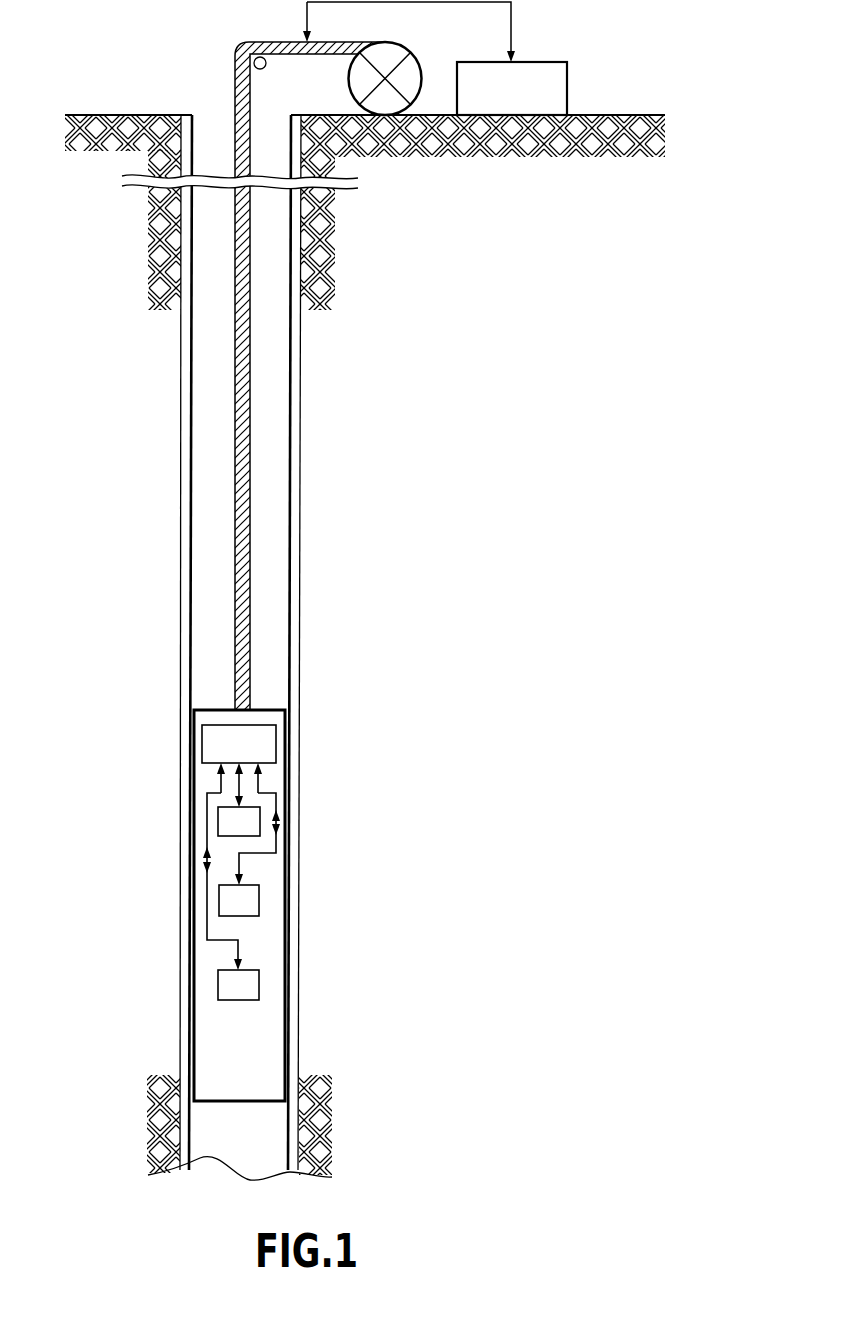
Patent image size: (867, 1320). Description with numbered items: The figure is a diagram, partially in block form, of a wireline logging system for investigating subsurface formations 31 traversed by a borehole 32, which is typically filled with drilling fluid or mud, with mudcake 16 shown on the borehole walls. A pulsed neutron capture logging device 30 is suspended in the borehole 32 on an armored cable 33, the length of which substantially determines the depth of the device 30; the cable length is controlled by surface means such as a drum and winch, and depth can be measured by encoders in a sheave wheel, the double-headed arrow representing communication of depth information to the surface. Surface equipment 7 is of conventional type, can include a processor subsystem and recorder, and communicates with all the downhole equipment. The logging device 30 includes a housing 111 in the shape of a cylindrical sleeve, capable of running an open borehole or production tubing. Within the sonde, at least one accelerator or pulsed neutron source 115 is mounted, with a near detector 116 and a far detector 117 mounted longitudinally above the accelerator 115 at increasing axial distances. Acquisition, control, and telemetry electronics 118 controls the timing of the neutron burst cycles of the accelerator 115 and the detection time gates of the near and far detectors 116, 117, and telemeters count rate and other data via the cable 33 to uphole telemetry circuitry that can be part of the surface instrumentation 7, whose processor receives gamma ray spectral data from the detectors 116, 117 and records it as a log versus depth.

The surface equipment 7 is at (545, 85).
The mudcake 16 is at (180, 508).
The logging device 30 is at (239, 863).
The subsurface formations 31 is at (103, 113).
The borehole 32 is at (215, 135).
The armored cable 33 is at (238, 55).
The housing 111 is at (193, 1007).
The pulsed neutron source 115 is at (252, 986).
The near detector 116 is at (252, 899).
The far detector 117 is at (228, 827).
The acquisition, control, and telemetry electronics 118 is at (263, 748).